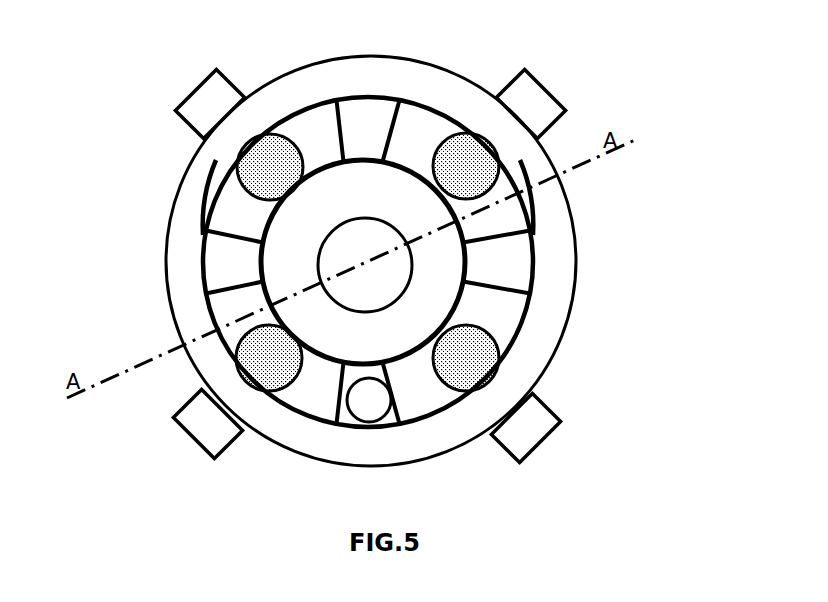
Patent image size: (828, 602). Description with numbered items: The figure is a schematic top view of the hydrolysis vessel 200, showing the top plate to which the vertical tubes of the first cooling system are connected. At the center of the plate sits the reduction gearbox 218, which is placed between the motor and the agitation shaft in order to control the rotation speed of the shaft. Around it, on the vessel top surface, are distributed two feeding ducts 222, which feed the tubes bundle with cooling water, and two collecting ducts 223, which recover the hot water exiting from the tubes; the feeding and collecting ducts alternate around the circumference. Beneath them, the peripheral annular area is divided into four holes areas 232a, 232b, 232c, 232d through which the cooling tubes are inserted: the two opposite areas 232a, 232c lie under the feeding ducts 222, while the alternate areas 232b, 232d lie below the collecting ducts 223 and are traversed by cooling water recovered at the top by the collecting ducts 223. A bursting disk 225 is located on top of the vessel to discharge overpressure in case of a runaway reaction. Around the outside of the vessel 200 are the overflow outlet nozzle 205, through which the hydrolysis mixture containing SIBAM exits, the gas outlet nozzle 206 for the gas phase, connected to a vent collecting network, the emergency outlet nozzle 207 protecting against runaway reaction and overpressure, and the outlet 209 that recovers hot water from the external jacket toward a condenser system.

The hydrolysis vessel 200 is at (638, 118).
The overflow outlet nozzle 205 is at (547, 432).
The gas outlet nozzle 206 is at (525, 88).
The emergency outlet nozzle 207 is at (206, 90).
The outlet 209 is at (197, 436).
The reduction gearbox 218 is at (365, 265).
The feeding duct 222 is at (464, 160).
The collecting duct 223 is at (276, 146).
The bursting disk 225 is at (368, 403).
The holes area 232a is at (520, 312).
The holes area 232b is at (500, 228).
The holes area 232c is at (232, 208).
The holes area 232d is at (242, 318).